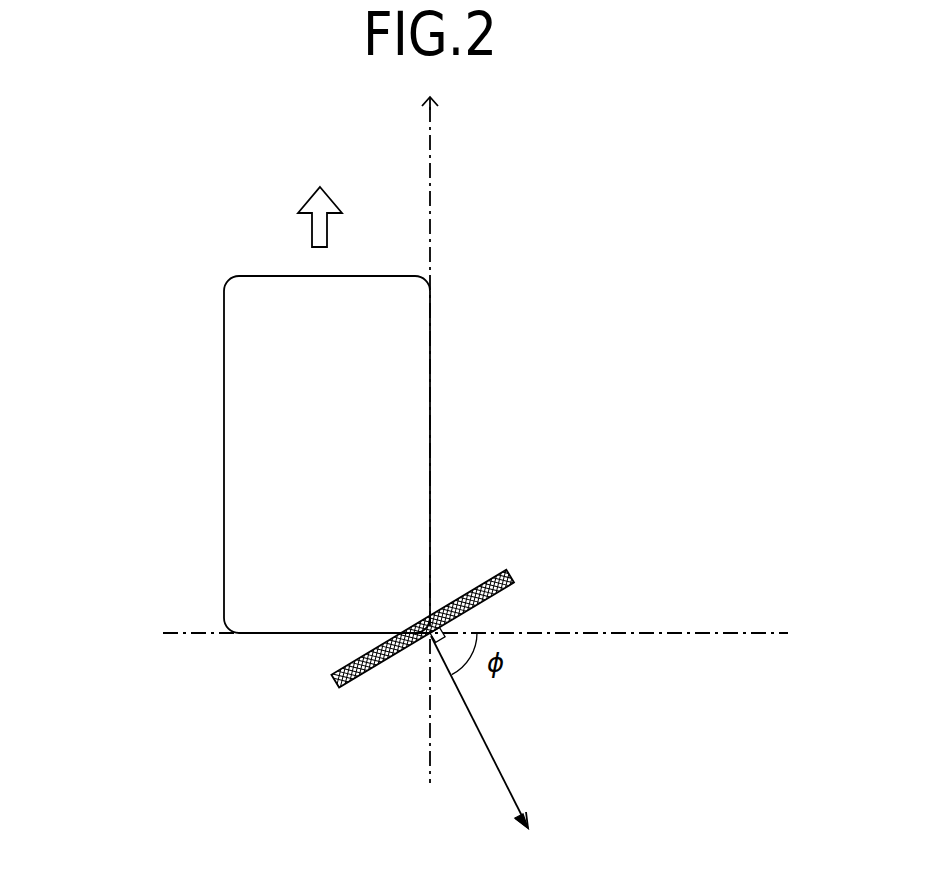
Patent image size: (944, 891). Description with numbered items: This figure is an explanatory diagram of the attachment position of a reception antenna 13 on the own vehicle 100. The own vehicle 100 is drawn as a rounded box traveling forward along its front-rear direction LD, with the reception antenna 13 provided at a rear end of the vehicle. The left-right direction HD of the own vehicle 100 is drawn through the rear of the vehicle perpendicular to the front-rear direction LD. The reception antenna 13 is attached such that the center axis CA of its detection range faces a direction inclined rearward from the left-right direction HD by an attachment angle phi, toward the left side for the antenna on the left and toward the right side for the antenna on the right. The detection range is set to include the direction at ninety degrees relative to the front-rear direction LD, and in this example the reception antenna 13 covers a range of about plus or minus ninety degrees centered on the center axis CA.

The own vehicle 100 is at (224, 352).
The reception antenna 13 is at (511, 580).
The front-rear direction LD is at (433, 200).
The left-right direction HD is at (713, 632).
The center axis CA is at (518, 812).